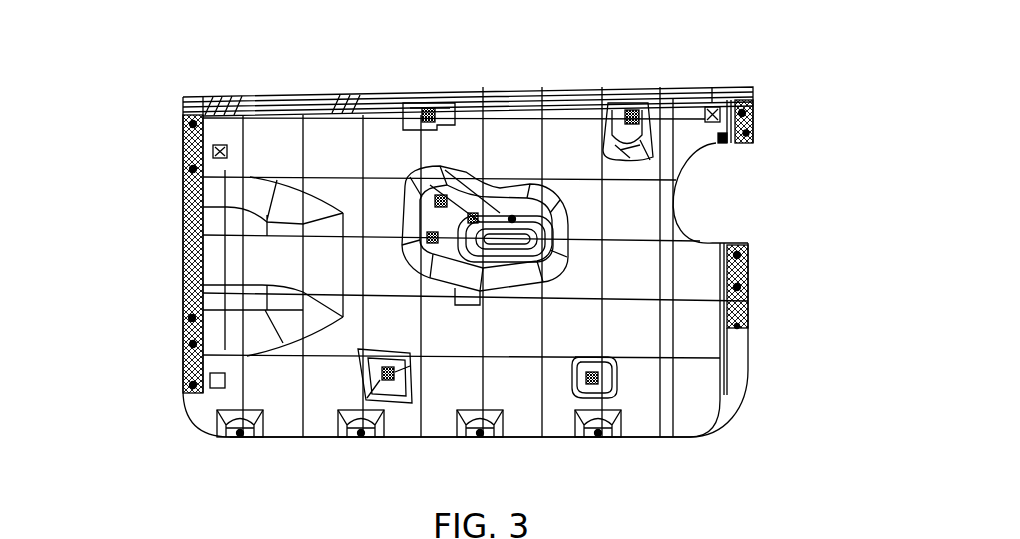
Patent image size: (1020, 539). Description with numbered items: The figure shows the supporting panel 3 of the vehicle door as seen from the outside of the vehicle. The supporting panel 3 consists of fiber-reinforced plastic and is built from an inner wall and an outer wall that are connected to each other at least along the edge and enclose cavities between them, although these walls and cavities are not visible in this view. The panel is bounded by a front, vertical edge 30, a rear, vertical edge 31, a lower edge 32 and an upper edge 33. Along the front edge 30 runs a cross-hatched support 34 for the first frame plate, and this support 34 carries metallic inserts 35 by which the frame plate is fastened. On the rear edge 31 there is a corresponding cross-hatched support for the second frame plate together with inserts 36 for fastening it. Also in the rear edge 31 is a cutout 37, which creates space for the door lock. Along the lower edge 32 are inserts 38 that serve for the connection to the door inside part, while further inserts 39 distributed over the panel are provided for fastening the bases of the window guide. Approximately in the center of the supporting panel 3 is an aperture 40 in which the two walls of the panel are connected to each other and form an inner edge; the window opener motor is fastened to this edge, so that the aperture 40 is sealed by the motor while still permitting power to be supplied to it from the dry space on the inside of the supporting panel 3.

The supporting panel 3 is at (772, 89).
The front vertical edge 30 is at (160, 277).
The rear vertical edge 31 is at (760, 301).
The lower edge 32 is at (553, 448).
The upper edge 33 is at (490, 90).
The support 34 is at (183, 322).
The metallic inserts 35 is at (183, 158).
The inserts 36 is at (753, 133).
The cutout 37 is at (714, 163).
The inserts 38 is at (480, 432).
The inserts 39 is at (428, 115).
The aperture 40 is at (512, 219).